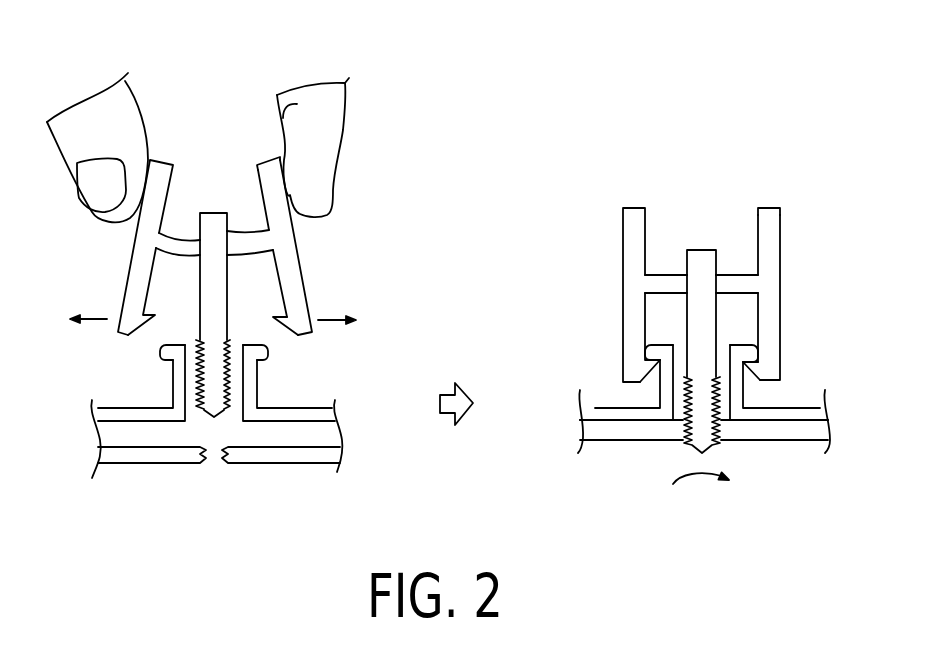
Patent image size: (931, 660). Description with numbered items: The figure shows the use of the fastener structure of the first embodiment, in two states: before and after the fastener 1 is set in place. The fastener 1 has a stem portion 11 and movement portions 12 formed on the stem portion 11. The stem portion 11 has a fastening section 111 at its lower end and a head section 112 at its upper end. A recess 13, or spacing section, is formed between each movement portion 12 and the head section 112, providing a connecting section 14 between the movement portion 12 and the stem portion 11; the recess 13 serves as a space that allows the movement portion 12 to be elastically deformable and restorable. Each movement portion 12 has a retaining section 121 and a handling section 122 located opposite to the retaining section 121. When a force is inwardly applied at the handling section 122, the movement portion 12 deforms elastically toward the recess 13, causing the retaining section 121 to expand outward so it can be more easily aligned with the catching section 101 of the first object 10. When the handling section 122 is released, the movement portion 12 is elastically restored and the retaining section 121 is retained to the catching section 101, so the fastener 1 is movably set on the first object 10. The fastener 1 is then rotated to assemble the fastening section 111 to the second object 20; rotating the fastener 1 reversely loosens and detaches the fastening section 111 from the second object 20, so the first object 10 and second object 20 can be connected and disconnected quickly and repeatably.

The fastener 1 is at (323, 228).
The first object 10 is at (117, 413).
The catching section 101 is at (178, 378).
The stem portion 11 is at (223, 295).
The fastening section 111 is at (223, 393).
The head section 112 is at (212, 220).
The movement portion 12 is at (305, 310).
The retaining section 121 is at (290, 325).
The handling section 122 is at (270, 177).
The recess 13 is at (248, 214).
The connecting section 14 is at (252, 249).
The second object 20 is at (138, 457).